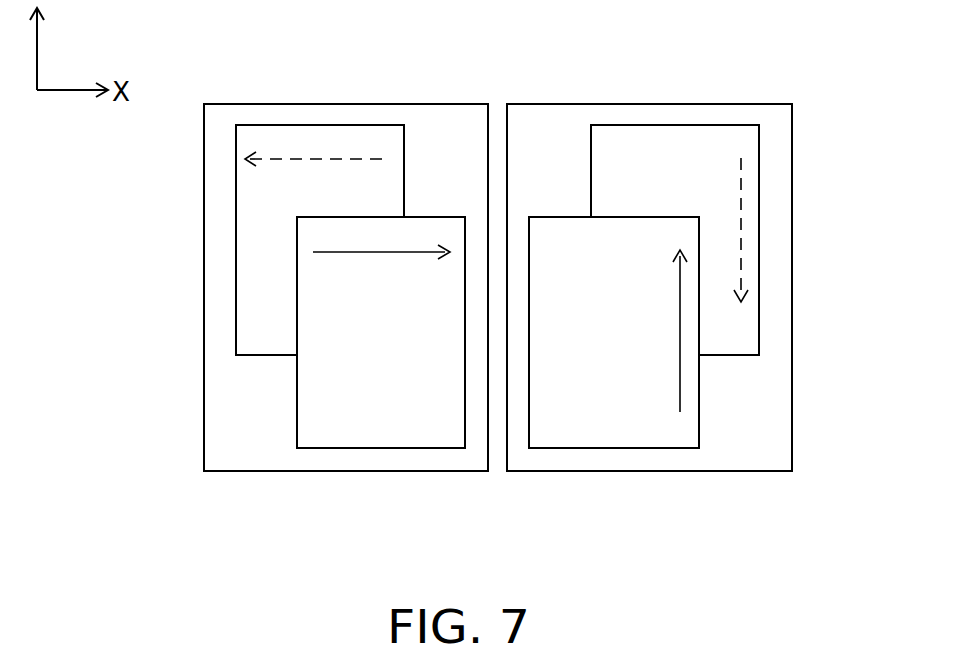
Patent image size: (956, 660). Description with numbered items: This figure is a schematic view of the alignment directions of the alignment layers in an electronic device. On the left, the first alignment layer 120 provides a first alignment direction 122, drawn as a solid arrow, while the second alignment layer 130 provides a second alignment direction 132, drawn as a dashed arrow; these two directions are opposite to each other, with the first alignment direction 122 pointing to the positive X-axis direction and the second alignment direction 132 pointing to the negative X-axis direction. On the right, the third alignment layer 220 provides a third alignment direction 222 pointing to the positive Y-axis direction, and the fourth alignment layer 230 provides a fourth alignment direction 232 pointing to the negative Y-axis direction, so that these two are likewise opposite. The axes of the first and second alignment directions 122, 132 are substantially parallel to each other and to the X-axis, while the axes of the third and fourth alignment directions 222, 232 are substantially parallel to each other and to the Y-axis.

The first alignment layer 120 is at (297, 415).
The first alignment direction 122 is at (413, 252).
The second alignment layer 130 is at (236, 322).
The second alignment direction 132 is at (333, 158).
The third alignment layer 220 is at (699, 430).
The third alignment direction 222 is at (680, 372).
The fourth alignment layer 230 is at (759, 146).
The fourth alignment direction 232 is at (741, 207).